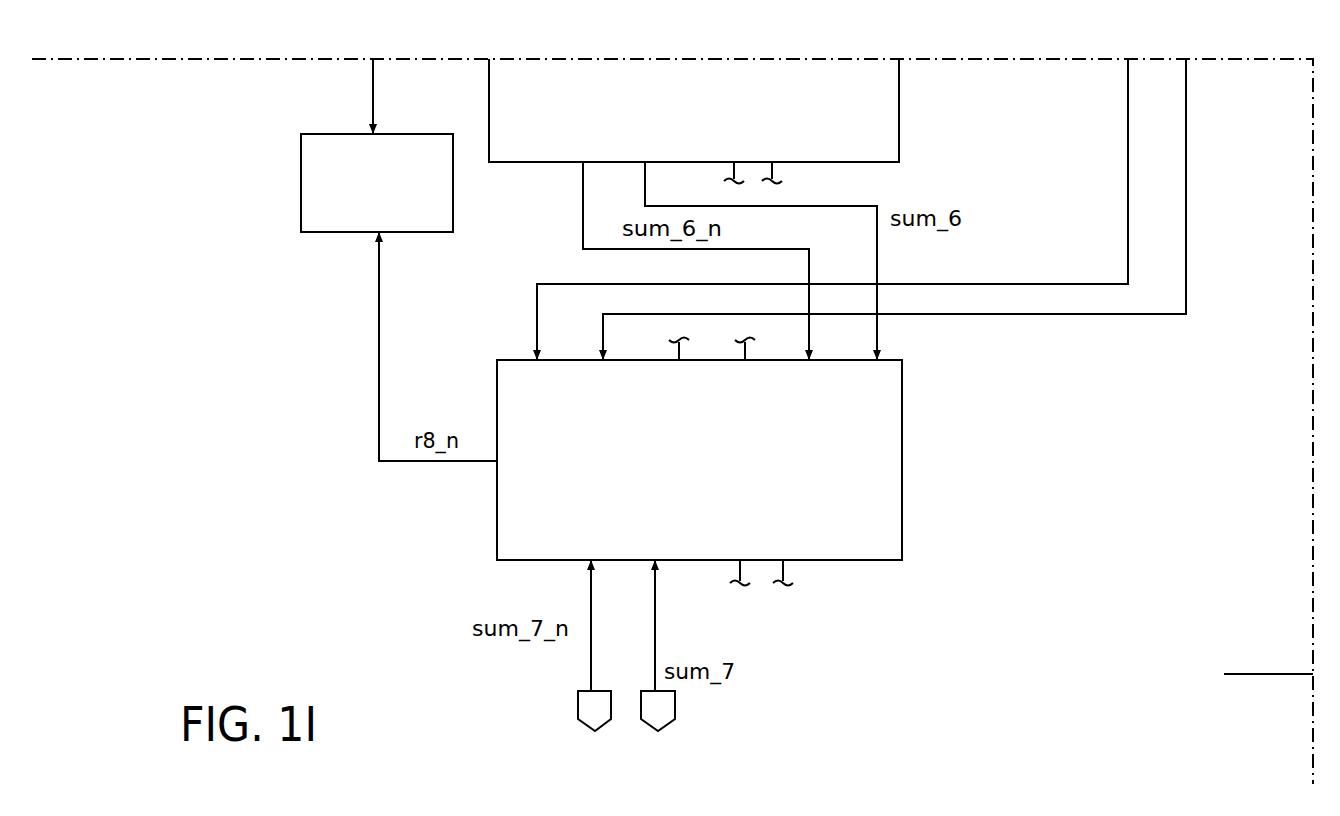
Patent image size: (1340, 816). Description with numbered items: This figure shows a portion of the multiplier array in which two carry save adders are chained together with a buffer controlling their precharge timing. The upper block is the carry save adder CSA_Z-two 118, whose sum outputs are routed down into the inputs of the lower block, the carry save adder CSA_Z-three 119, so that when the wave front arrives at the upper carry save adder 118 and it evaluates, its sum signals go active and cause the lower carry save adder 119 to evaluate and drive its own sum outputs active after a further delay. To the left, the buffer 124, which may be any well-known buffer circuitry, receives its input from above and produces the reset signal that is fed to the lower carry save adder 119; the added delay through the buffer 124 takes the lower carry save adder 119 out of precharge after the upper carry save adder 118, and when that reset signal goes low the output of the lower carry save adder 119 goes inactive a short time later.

The CSA_Z2 118 is at (898, 137).
The CSA_Z3 119 is at (900, 448).
The buffer B_6 124 is at (300, 196).